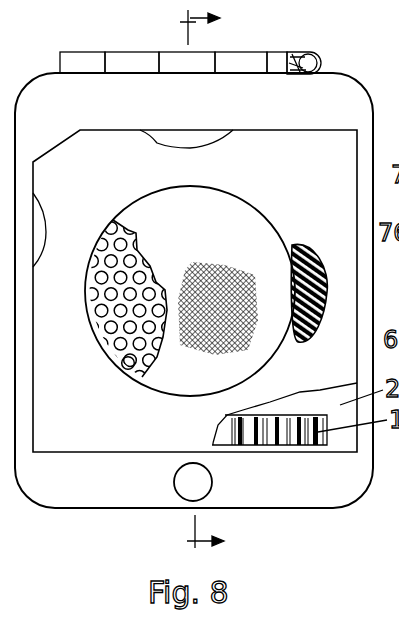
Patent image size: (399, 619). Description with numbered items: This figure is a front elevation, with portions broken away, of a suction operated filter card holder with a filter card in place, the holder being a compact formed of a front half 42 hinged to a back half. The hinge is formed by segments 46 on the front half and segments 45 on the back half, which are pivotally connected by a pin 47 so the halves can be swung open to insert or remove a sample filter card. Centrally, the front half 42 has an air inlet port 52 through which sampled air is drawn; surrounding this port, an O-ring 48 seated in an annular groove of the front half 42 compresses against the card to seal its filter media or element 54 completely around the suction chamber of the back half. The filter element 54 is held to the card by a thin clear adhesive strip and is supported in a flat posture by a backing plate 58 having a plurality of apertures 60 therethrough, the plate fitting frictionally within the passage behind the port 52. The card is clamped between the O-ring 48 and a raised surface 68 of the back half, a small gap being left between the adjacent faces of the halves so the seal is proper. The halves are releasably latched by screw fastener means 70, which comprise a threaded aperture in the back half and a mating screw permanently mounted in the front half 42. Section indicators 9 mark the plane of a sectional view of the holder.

The section line 9- 9 is at (210, 284).
The front half 42 is at (310, 275).
The hinge segment 45 is at (78, 52).
The hinge segment 46 is at (128, 51).
The pin 47 is at (313, 53).
The O-ring 48 is at (295, 245).
The air inlet port 52 is at (247, 208).
The filter media or element 54 is at (206, 227).
The backing plate 58 is at (94, 284).
The aperture 60 is at (125, 365).
The raised surface 68 is at (180, 137).
The screw fastener means 70 is at (162, 500).